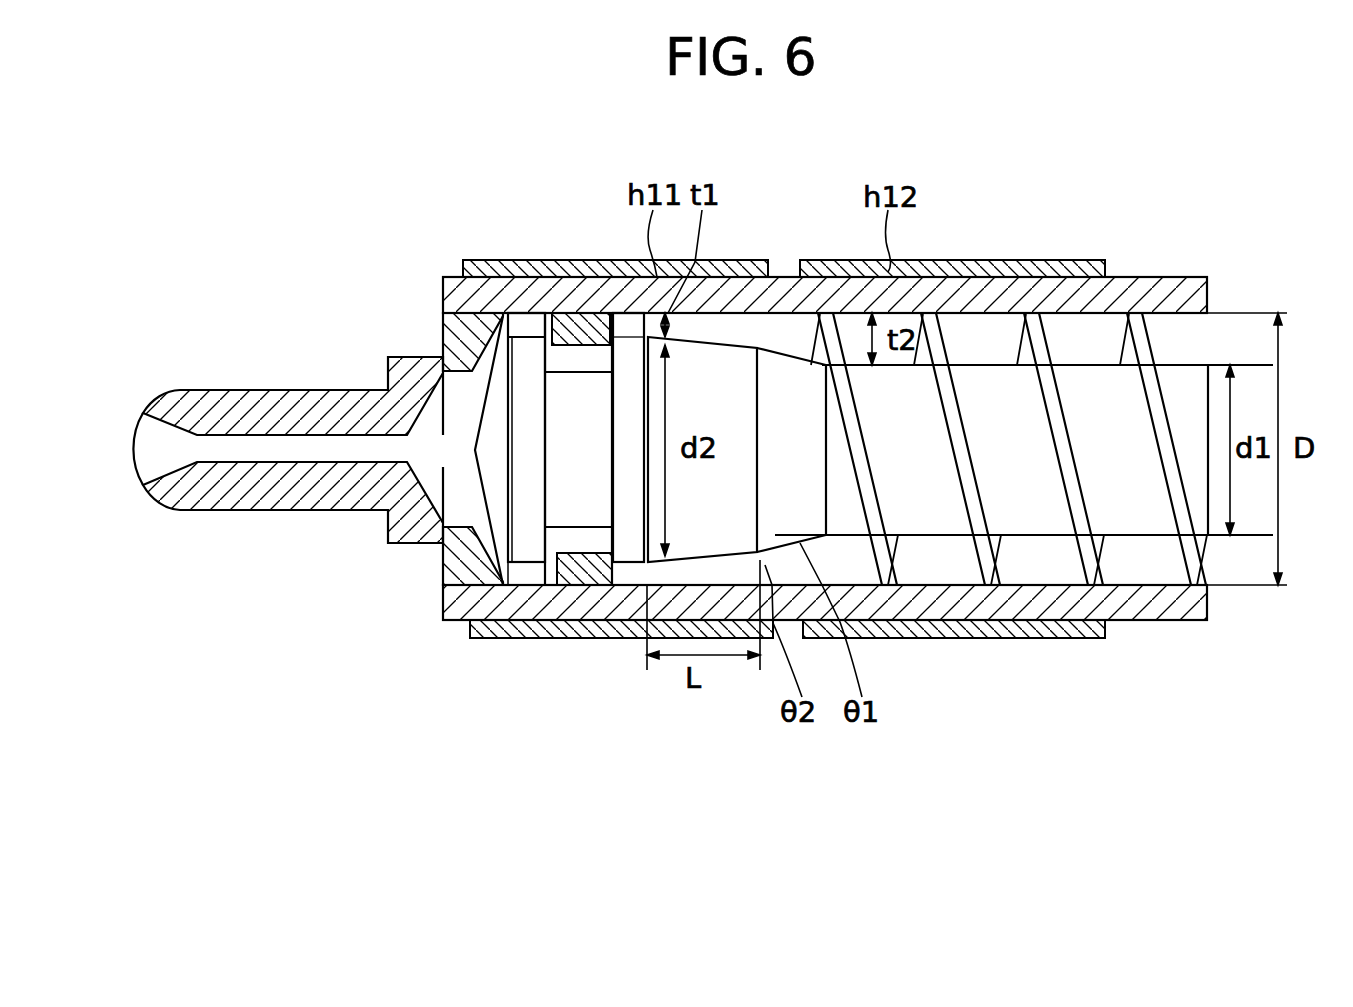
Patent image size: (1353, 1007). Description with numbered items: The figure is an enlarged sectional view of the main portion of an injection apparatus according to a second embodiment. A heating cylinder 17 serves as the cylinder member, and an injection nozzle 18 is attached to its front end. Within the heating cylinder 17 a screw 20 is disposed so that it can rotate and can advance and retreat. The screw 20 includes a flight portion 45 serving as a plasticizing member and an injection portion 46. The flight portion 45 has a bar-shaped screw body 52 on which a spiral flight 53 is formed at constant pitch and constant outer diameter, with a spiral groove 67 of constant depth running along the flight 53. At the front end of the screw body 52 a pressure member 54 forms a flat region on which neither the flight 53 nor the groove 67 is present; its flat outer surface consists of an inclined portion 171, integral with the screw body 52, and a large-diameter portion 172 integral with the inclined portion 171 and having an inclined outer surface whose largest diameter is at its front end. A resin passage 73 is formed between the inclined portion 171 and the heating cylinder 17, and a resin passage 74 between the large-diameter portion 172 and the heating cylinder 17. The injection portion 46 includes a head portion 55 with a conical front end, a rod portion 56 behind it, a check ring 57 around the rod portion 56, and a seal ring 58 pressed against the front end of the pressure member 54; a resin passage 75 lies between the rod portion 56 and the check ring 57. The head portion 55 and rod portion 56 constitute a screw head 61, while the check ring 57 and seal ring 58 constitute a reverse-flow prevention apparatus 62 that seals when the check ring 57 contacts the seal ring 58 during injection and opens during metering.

The heating cylinder 17 is at (865, 453).
The injection nozzle 18 is at (222, 390).
The screw 20 is at (1024, 443).
The flight portion 45 is at (1012, 454).
The injection portion 46 is at (564, 515).
The screw body 52 is at (922, 517).
The flight 53 is at (1037, 330).
The pressure member 54 is at (738, 537).
The head portion 55 is at (530, 540).
The rod portion 56 is at (578, 513).
The check ring 57 is at (597, 570).
The seal ring 58 is at (633, 547).
The screw head 61 is at (545, 453).
The reverse-flow prevention apparatus 62 is at (601, 521).
The groove 67 is at (1093, 337).
The resin passage 73 is at (787, 332).
The resin passage 74 is at (582, 357).
The resin passage 75 is at (534, 336).
The inclined portion 171 is at (821, 464).
The large-diameter portion 172 is at (736, 405).